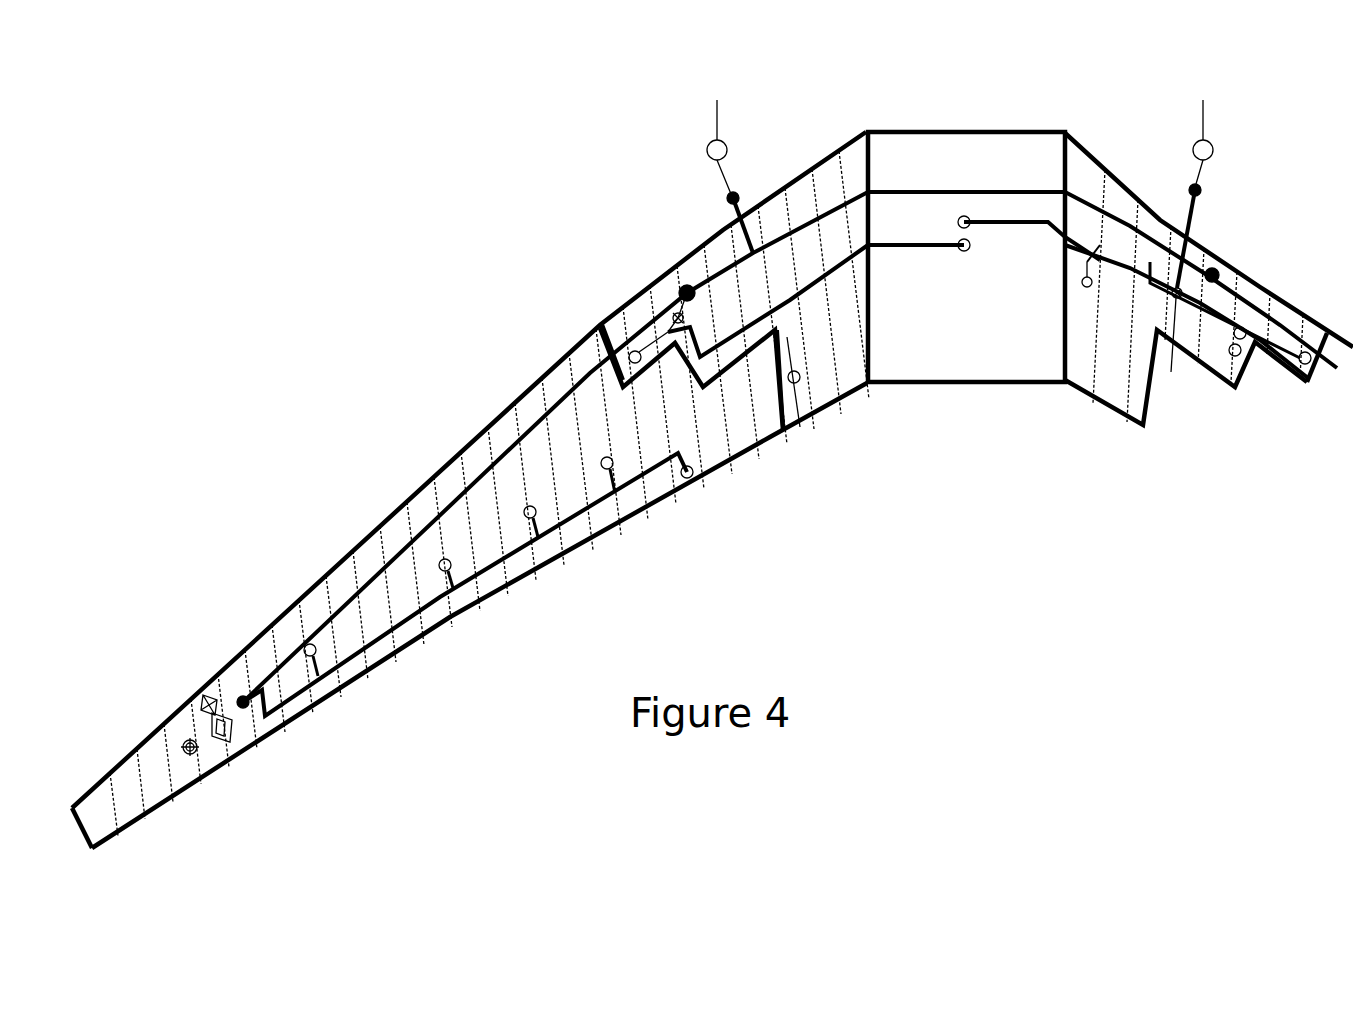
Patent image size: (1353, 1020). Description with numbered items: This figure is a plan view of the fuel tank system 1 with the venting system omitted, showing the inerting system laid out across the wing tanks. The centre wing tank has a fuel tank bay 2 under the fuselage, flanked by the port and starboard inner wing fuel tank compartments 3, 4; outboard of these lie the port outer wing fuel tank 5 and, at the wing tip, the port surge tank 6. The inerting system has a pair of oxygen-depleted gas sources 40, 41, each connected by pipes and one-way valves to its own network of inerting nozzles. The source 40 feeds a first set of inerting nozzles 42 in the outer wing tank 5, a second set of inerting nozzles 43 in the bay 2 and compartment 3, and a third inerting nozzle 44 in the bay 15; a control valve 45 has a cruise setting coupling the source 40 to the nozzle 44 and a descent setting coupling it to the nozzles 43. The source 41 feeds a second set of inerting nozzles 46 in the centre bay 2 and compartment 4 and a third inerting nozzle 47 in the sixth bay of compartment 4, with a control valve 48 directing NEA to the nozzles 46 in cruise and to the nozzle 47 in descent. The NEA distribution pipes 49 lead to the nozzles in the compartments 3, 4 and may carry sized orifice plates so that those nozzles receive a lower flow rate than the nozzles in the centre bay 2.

The fuel tank system 1 is at (520, 255).
The fuel tank bay 2 is at (975, 307).
The port inner wing fuel tank compartment 3 is at (855, 408).
The starboard inner wing fuel tank compartment 4 is at (1115, 445).
The port outer wing fuel tank 5 is at (437, 436).
The port surge tank 6 is at (165, 697).
The bay 15 is at (1312, 330).
The oxygen-depleted gas source 40 is at (728, 164).
The oxygen-depleted gas source 41 is at (1197, 182).
The first set of inerting nozzles 42 is at (307, 645).
The second set of inerting nozzles 43 is at (632, 350).
The third inerting nozzle 44 is at (1300, 364).
The control valve 45 is at (684, 318).
The second set of inerting nozzles 46 is at (957, 221).
The third inerting nozzle 47 is at (1244, 340).
The control valve 48 is at (1168, 346).
The NEA distribution pipes 49 is at (657, 343).